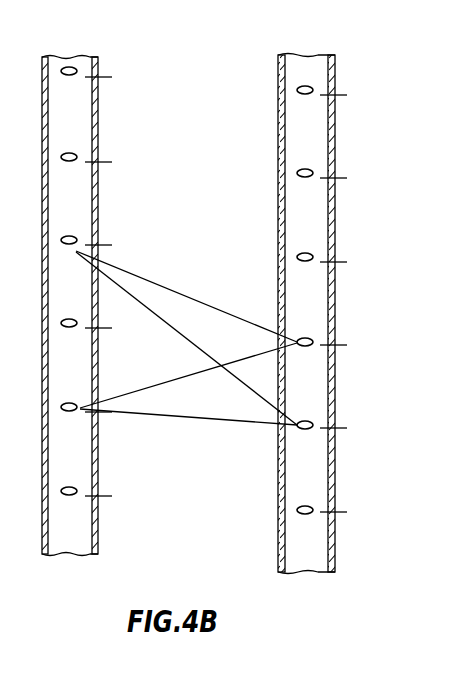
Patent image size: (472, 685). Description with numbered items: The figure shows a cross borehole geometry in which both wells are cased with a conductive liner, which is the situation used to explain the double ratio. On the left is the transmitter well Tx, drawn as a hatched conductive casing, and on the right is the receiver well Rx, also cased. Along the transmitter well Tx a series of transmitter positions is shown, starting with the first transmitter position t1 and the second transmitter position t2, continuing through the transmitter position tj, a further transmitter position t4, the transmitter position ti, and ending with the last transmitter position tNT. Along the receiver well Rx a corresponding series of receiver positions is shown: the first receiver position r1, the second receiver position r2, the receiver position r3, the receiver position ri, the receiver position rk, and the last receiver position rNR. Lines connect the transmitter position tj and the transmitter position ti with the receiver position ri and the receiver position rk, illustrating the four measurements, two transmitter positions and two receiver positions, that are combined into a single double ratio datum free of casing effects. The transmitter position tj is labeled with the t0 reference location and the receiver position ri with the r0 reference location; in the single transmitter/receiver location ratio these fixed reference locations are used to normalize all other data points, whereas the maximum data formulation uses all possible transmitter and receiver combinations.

The transmitter well Tx is at (70, 286).
The receiver well Rx is at (306, 295).
The first transmitter position t1 is at (93, 67).
The second transmitter position t2 is at (93, 150).
The j'th transmitter position (t0 reference) tj is at (179, 322).
The transmitter position t4 is at (86, 323).
The i'th transmitter position ti is at (179, 391).
The last transmitter position tNT is at (97, 484).
The first receiver position r1 is at (328, 83).
The second receiver position r2 is at (328, 166).
The receiver position r3 is at (322, 257).
The i'th receiver position (r0 reference) ri is at (340, 333).
The k'th receiver position rk is at (329, 417).
The last receiver position rNR is at (332, 503).